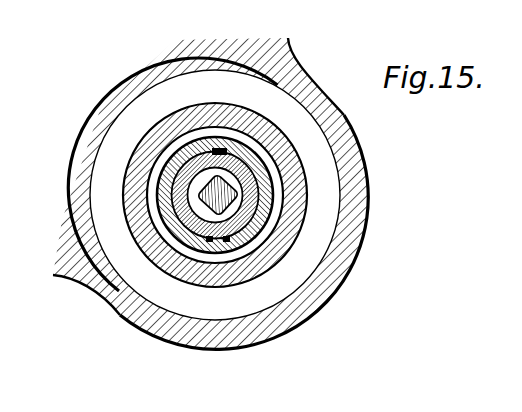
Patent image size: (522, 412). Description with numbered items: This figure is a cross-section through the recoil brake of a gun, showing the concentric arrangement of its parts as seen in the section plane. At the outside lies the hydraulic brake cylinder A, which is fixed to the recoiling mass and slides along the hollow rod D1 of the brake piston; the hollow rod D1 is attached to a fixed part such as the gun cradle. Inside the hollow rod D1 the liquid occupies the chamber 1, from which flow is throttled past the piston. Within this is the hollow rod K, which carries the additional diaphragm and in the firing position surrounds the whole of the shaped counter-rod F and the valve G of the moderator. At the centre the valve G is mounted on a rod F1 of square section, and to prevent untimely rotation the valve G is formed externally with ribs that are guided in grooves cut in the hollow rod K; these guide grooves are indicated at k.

The chamber 1 is at (288, 102).
The hydraulic brake cylinder A is at (306, 311).
The hollow rod D1 is at (226, 281).
The hollow rod K is at (186, 244).
The shaped counter-rod F is at (247, 146).
The valve of the moderator G is at (258, 210).
The key k is at (218, 149).
The rod of square section F1 is at (240, 194).